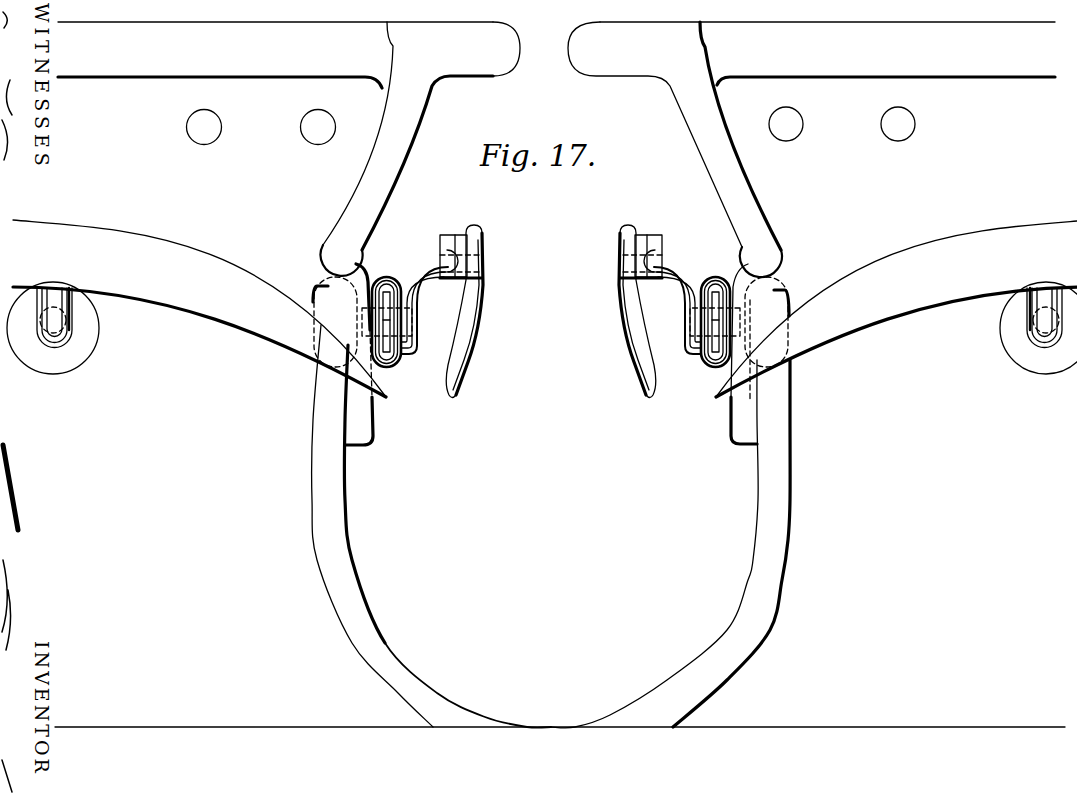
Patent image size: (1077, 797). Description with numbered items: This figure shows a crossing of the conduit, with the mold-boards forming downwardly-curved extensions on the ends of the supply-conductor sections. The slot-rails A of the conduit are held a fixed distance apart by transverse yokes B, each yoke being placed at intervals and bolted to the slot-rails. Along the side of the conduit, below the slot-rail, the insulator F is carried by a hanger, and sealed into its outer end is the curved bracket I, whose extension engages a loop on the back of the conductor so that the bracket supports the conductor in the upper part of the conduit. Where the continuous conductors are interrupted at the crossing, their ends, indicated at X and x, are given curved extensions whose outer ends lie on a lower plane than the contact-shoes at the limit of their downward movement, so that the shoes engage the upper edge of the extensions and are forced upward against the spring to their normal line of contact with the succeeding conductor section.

The slot-rail A is at (366, 162).
The transverse yoke B is at (566, 496).
The insulator F is at (91, 336).
The curved bracket I is at (427, 271).
The curved bar X is at (228, 302).
The lever x is at (473, 327).